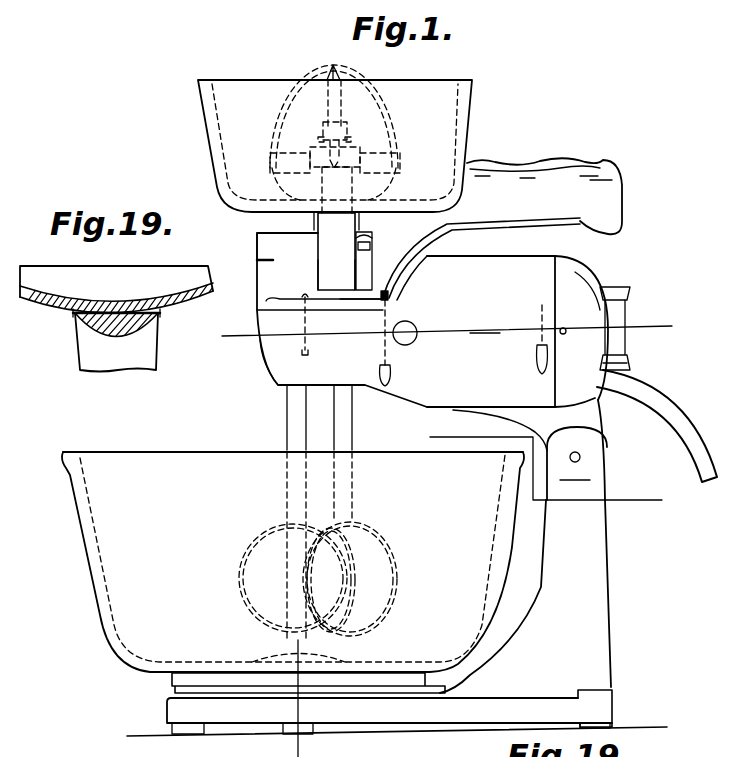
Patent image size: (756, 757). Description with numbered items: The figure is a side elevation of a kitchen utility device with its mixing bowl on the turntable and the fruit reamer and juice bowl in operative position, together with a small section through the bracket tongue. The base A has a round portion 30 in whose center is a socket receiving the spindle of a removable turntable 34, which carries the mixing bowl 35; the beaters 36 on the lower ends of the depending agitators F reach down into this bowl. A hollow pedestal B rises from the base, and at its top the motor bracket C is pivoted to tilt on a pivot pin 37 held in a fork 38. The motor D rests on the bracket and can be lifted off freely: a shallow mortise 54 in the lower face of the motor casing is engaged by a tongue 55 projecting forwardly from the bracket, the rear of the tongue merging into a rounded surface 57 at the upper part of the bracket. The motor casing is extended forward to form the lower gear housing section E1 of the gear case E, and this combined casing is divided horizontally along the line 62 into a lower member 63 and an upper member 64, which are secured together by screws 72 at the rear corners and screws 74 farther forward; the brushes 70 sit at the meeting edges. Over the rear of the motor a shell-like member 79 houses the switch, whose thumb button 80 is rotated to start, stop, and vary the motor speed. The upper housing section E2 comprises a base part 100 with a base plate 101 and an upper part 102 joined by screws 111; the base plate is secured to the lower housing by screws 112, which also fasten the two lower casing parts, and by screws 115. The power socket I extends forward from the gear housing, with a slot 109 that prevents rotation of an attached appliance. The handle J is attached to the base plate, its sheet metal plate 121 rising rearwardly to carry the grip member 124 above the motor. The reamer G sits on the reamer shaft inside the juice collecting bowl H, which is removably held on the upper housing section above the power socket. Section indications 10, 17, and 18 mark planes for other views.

In FIG. 1, the fruit reamer G is at (320, 73).
In FIG. 1, the juice collecting bowl H is at (205, 121).
In FIG. 1, the handle member J is at (546, 162).
In FIG. 1, the grip member 124 is at (604, 185).
In FIG. 1, the power socket I is at (256, 241).
In FIG. 1, the slot 109 is at (273, 260).
In FIG. 1, the upper part of housing section E² 102 is at (349, 239).
In FIG. 1, the base part of housing section E² 100 is at (349, 281).
In FIG. 1, the screws 111 is at (373, 243).
In FIG. 1, the sheet metal plate 121 is at (397, 272).
In FIG. 1, the screws 115 is at (390, 306).
In FIG. 1, the base plate 101 is at (352, 300).
In FIG. 1, the brushes 70 is at (416, 340).
In FIG. 1, the screws 74 is at (394, 373).
In FIG. 1, the screws 112 is at (305, 318).
In FIG. 1, the dividing line 62 is at (487, 334).
In FIG. 1, the lower member of the casing 63 is at (477, 392).
In FIG. 19, the lower member of the casing 63 is at (50, 308).
In FIG. 1, the screws 72 is at (539, 352).
In FIG. 1, the upper member of the casing 64 is at (522, 262).
In FIG. 1, the shell-like member 79 is at (577, 272).
In FIG. 1, the thumb button 80 is at (618, 292).
In FIG. 1, the gear case or housing E is at (231, 330).
In FIG. 1, the upper section of the gear housing E2 is at (324, 283).
In FIG. 1, the lower section of the gear housing E1 is at (283, 362).
In FIG. 1, the motor D is at (517, 331).
In FIG. 1, the depending agitators F is at (342, 420).
In FIG. 1, the section line 10- 10 is at (668, 322).
In FIG. 1, the mixing bowl 35 is at (92, 550).
In FIG. 1, the beaters 36 is at (243, 566).
In FIG. 1, the removable turntable 34 is at (175, 685).
In FIG. 1, the round portion of the base 30 is at (180, 711).
In FIG. 1, the base A is at (397, 712).
In FIG. 1, the section line 17- 17 is at (290, 647).
In FIG. 1, the section line 18- 18 is at (443, 445).
In FIG. 1, the tongue 55 is at (506, 414).
In FIG. 19, the tongue 55 is at (84, 327).
In FIG. 1, the motor bracket C is at (578, 423).
In FIG. 1, the rounded surface 57 is at (595, 432).
In FIG. 19, the rounded surface 57 is at (153, 353).
In FIG. 1, the pivot pin 37 is at (580, 457).
In FIG. 1, the fork 38 is at (590, 481).
In FIG. 1, the pedestal B is at (588, 621).
In FIG. 19, the groove or mortise 54 is at (116, 306).